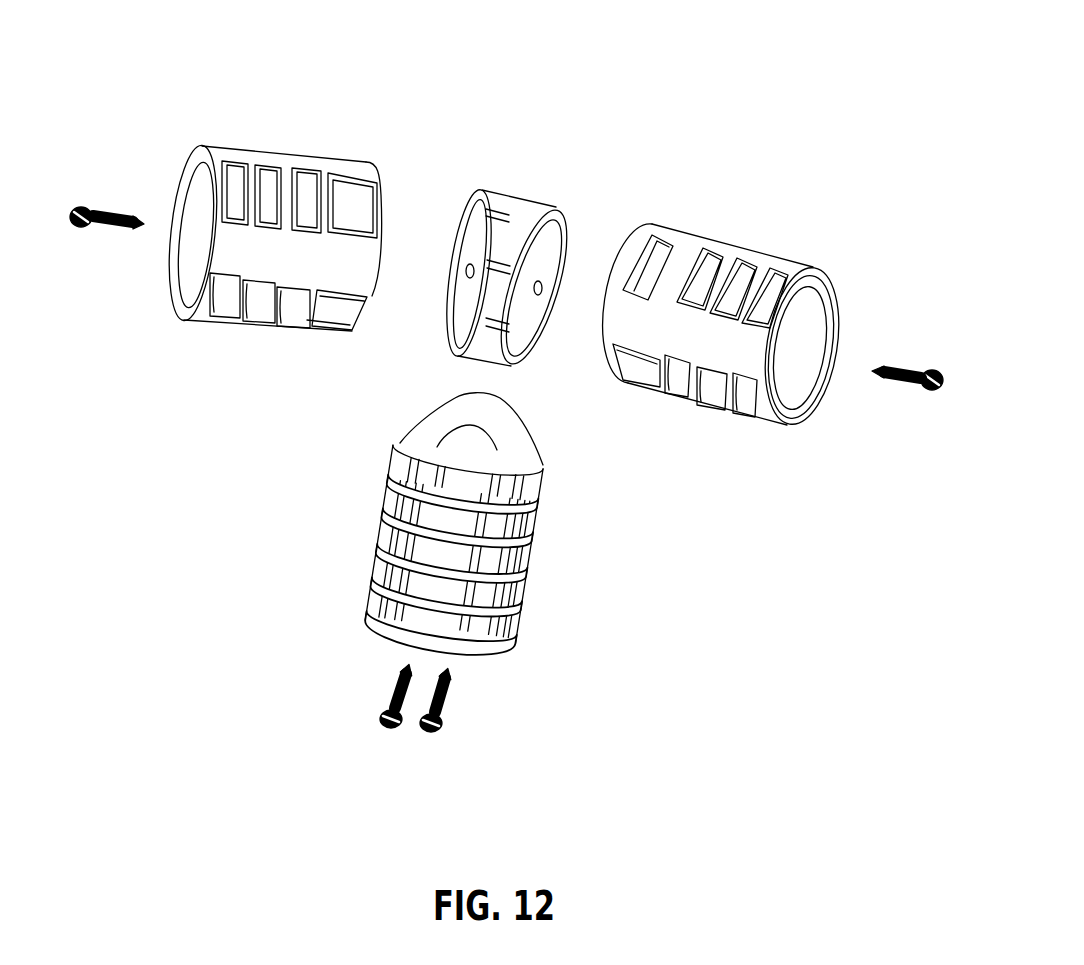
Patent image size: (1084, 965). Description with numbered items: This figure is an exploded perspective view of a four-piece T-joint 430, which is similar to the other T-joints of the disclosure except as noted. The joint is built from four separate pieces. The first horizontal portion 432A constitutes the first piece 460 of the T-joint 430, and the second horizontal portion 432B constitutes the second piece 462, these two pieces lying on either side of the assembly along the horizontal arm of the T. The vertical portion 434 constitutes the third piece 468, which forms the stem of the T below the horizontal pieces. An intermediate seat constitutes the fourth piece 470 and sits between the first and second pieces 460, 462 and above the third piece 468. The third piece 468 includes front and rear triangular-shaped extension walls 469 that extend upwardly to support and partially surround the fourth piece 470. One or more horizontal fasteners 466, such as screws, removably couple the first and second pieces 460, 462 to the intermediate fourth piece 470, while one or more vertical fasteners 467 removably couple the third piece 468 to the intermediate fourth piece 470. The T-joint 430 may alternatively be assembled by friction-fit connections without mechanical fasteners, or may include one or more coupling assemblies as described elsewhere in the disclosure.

The four-piece T-joint 430 is at (386, 86).
The first horizontal portion 432A is at (712, 412).
The second horizontal portion 432B is at (307, 167).
The vertical portion 434 is at (385, 527).
The first piece 460 is at (772, 249).
The second piece 462 is at (244, 330).
The horizontal fasteners 466 is at (118, 233).
The vertical fasteners 467 is at (378, 718).
The third piece 468 is at (542, 566).
The triangular-shaped extension walls 469 is at (505, 412).
The fourth piece 470 is at (513, 195).